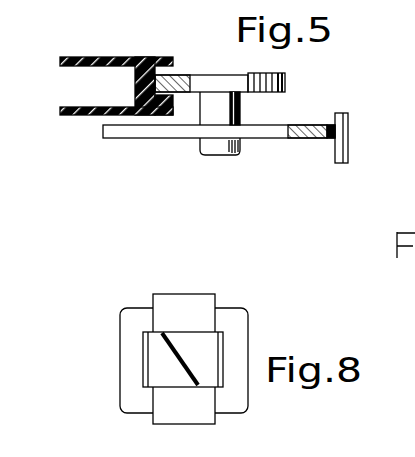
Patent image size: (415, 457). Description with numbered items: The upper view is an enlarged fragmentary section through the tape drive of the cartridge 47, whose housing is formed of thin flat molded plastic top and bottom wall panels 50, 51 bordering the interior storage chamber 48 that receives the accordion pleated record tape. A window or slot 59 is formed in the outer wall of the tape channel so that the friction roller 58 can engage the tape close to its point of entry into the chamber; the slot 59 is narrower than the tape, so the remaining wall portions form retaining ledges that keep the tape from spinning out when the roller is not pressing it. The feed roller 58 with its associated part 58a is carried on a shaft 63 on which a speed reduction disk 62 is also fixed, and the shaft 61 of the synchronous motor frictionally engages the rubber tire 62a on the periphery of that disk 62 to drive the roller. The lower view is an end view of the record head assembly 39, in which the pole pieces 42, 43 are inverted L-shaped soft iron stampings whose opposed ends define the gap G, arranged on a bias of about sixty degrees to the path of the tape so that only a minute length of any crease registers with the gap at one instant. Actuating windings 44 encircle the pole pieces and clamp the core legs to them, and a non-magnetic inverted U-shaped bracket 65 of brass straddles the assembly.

In FIG. 5, the cartridge 47 is at (133, 52).
In FIG. 5, the storage chamber 48 is at (80, 93).
In FIG. 5, the top wall panel 50 is at (103, 51).
In FIG. 5, the bottom wall panel 51 is at (86, 115).
In FIG. 5, the friction roller 58 is at (287, 80).
In FIG. 5, the knob shaft plate 58a is at (197, 86).
In FIG. 5, the window or slot 59 is at (172, 81).
In FIG. 5, the motor shaft 61 is at (348, 120).
In FIG. 5, the disk 62 is at (297, 125).
In FIG. 5, the rubber tire 62a is at (328, 137).
In FIG. 5, the shaft 63 is at (243, 110).
In FIG. 8, the sensor assembly 39 is at (117, 361).
In FIG. 8, the pole piece 42 is at (157, 340).
In FIG. 8, the pole piece 43 is at (207, 376).
In FIG. 8, the actuating windings 44 is at (237, 313).
In FIG. 8, the inverted U-shaped bracket 65 is at (160, 297).
In FIG. 8, the gap G is at (192, 372).